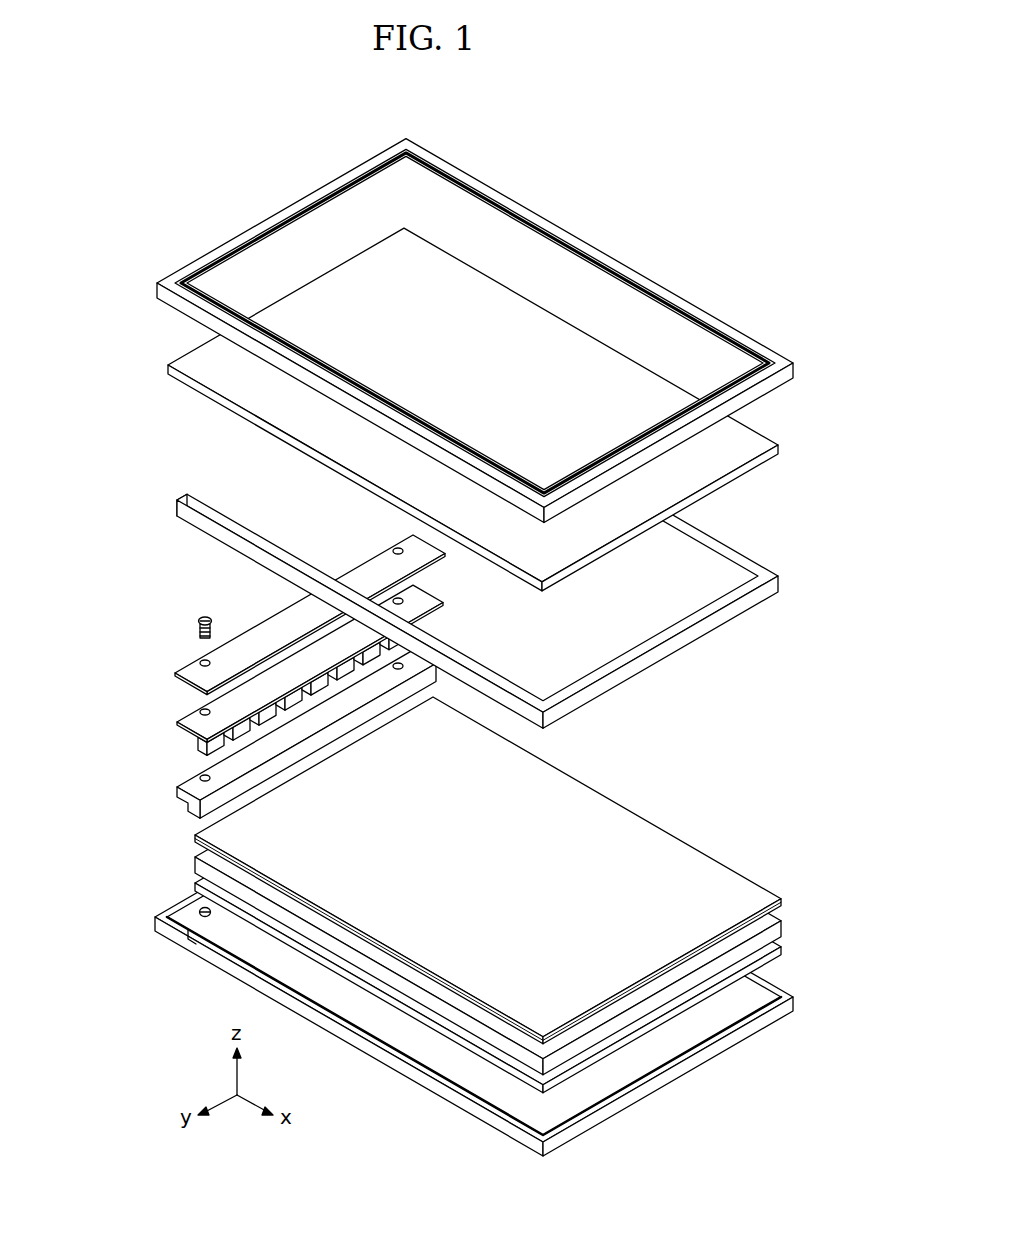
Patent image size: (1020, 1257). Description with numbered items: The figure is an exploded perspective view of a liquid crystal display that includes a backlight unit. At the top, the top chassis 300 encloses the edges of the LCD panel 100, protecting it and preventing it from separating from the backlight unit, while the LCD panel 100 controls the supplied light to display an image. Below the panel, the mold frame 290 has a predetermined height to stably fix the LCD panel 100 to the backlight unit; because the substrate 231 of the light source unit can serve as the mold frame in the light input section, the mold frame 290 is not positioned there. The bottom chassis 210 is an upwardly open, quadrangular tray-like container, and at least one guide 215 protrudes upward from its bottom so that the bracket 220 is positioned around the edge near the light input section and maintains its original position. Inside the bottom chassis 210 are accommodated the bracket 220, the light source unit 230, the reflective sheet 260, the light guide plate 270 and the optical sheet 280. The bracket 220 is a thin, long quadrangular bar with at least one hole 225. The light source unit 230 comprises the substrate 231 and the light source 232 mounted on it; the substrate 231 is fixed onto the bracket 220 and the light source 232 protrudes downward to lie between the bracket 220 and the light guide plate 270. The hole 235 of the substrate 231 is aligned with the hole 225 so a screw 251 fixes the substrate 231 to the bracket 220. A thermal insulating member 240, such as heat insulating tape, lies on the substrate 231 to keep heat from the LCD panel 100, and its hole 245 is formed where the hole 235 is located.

The LCD panel 100 is at (167, 366).
The top chassis 300 is at (155, 288).
The mold frame 290 is at (176, 503).
The screw 251 is at (207, 615).
The hole of the thermal insulating member 245 is at (200, 661).
The thermal insulating member 240 is at (270, 615).
The hole of the substrate 235 is at (200, 710).
The light source unit 230 is at (246, 675).
The substrate 231 is at (185, 726).
The light source 232 is at (197, 750).
The hole of the bracket 225 is at (197, 777).
The bracket 220 is at (268, 742).
The optical sheet 280 is at (193, 838).
The light guide plate 270 is at (193, 865).
The reflective sheet 260 is at (193, 888).
The bottom chassis 210 is at (170, 920).
The guide 215 is at (207, 918).